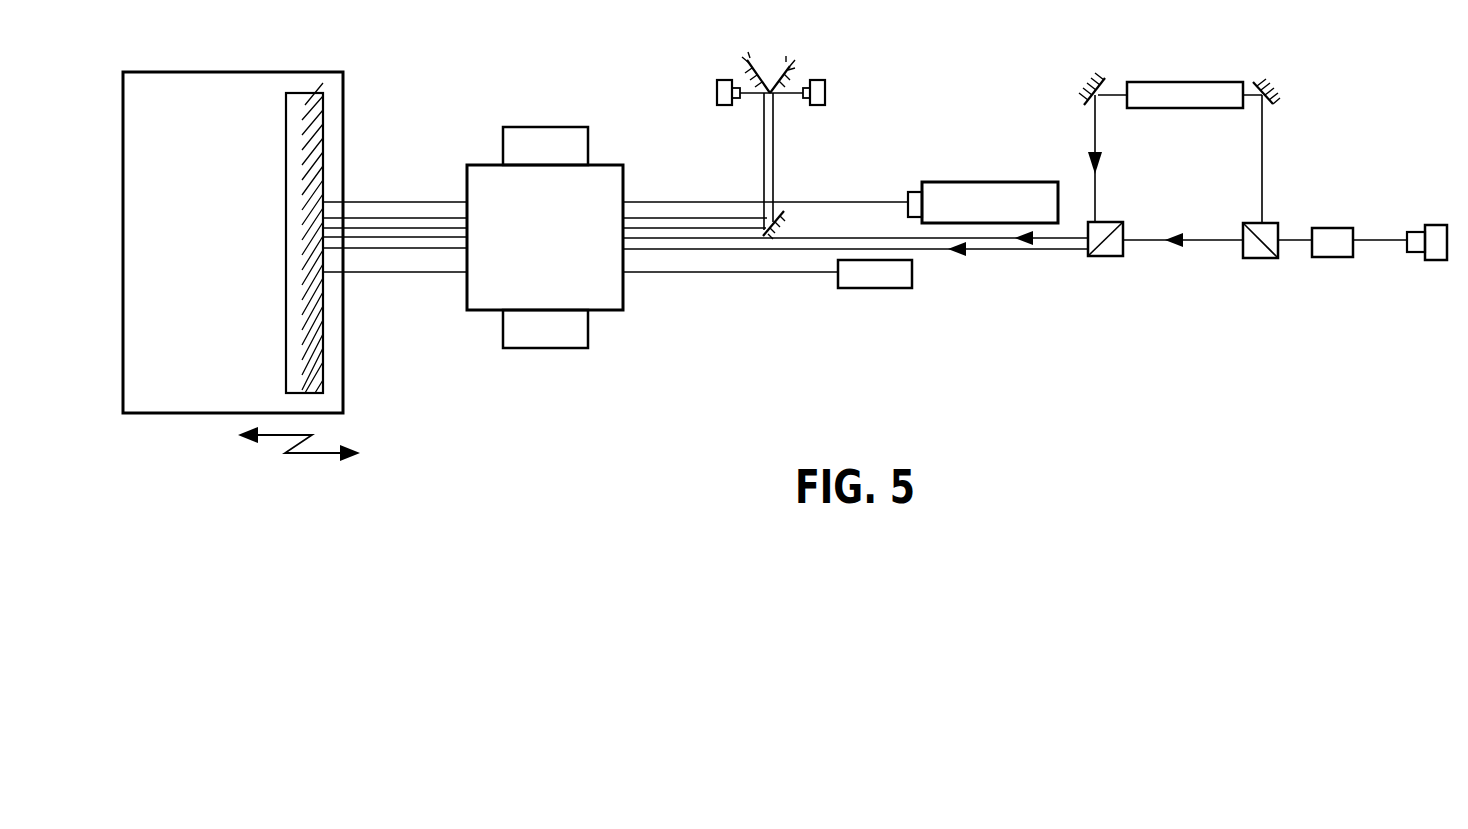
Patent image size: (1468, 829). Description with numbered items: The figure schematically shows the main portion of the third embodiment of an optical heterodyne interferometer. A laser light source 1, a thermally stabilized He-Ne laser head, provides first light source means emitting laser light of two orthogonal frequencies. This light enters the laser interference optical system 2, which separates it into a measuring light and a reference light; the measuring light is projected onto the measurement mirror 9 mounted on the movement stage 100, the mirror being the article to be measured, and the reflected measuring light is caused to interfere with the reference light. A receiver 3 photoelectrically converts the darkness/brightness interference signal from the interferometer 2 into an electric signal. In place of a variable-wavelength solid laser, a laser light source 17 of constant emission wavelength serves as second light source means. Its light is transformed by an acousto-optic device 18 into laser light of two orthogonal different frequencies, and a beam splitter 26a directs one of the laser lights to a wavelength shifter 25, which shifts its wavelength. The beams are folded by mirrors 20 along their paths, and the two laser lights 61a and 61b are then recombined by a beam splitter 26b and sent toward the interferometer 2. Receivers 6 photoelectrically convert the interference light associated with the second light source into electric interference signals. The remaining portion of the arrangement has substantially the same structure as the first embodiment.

The movement stage 100 is at (160, 413).
The measurement mirror 9 is at (323, 338).
The laser interference optical system 2 is at (624, 292).
The laser light source 1 is at (967, 182).
The receiver 3 is at (877, 288).
The receiver 6 is at (716, 93).
The mirror 20 is at (763, 66).
The laser light 61a is at (1097, 133).
The laser light 61b is at (1052, 252).
The beam splitter 26a is at (1252, 259).
The beam splitter 26b is at (1107, 257).
The wavelength shifter 25 is at (1187, 82).
The acousto-optic device 18 is at (1335, 258).
The laser light source 17 is at (1432, 261).